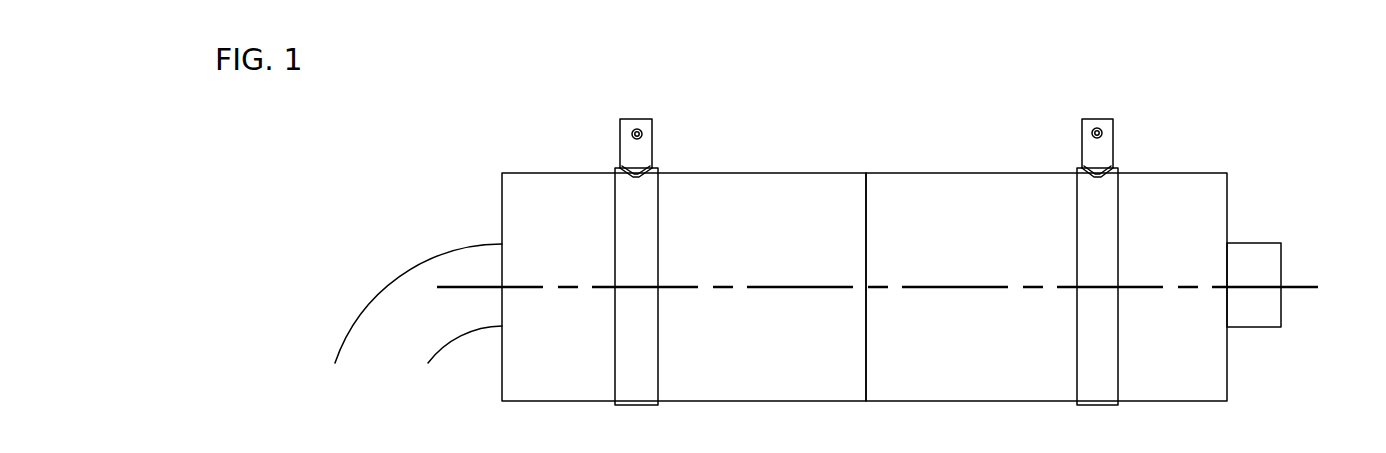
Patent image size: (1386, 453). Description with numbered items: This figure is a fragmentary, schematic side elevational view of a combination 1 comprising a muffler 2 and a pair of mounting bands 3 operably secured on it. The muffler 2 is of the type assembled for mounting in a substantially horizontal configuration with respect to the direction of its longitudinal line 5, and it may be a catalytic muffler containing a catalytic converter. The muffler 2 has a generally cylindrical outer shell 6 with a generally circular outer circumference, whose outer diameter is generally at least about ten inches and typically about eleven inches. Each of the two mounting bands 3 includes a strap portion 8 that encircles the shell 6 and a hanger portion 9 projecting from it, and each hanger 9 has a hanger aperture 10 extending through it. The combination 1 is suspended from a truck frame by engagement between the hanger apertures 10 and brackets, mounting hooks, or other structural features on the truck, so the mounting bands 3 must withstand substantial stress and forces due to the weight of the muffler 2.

The combination 1 is at (453, 158).
The muffler 2 is at (880, 170).
The mounting bands 3 is at (870, 279).
The longitudinal line 5 is at (1300, 283).
The outer shell 6 is at (740, 173).
The strap portion 8 is at (638, 402).
The hanger portion 9 is at (911, 120).
The hanger aperture 10 is at (634, 131).